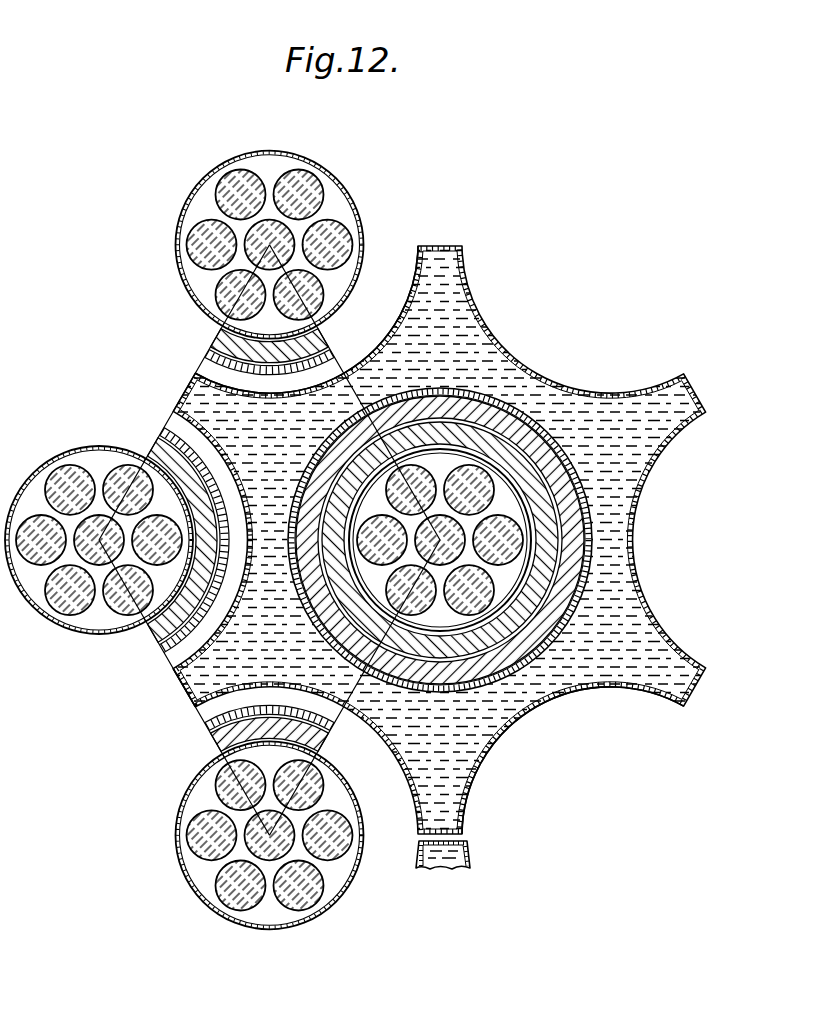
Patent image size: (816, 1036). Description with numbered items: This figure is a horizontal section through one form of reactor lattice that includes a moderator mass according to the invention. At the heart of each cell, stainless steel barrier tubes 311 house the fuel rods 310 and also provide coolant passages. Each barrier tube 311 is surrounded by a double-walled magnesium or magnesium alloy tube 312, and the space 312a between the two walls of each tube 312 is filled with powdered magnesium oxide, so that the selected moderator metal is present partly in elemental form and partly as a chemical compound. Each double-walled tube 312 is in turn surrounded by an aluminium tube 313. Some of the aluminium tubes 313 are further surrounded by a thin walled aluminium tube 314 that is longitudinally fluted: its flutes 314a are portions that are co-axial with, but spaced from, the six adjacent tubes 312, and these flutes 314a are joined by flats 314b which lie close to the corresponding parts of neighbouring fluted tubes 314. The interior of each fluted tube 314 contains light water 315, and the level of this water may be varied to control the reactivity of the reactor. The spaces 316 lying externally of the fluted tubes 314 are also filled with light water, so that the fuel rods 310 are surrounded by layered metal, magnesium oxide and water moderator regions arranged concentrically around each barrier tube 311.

The fuel rods 310 is at (462, 480).
The stainless steel barrier tubes 311 is at (503, 457).
The double-walled magnesium tube 312 is at (240, 755).
The space between the walls 312a is at (160, 628).
The aluminium tube 313 is at (170, 655).
The thin walled aluminium tube 314 is at (496, 754).
The flutes 314a is at (523, 718).
The flats 314b is at (455, 836).
The light water 315 is at (198, 397).
The spaces externally of the tubes 316 is at (187, 667).